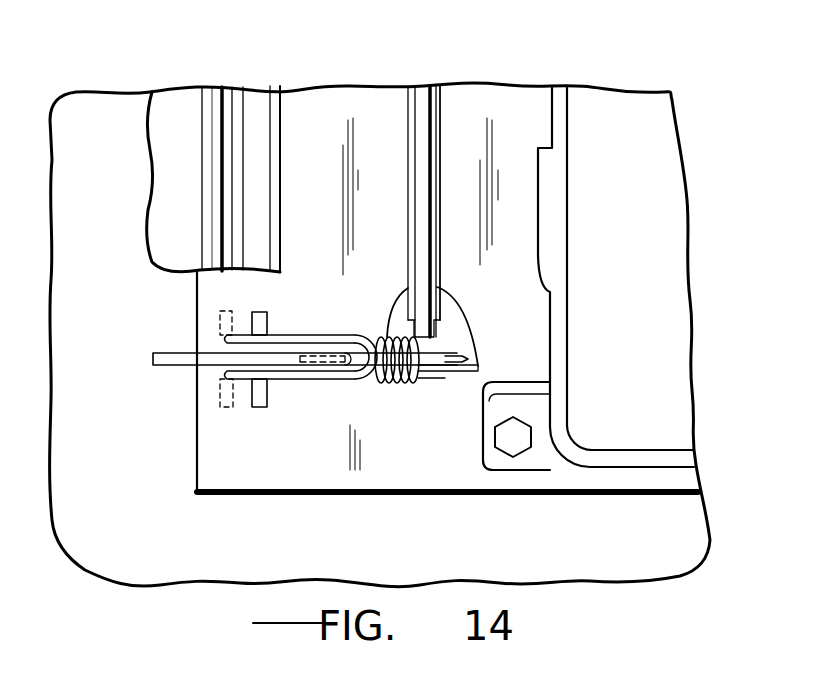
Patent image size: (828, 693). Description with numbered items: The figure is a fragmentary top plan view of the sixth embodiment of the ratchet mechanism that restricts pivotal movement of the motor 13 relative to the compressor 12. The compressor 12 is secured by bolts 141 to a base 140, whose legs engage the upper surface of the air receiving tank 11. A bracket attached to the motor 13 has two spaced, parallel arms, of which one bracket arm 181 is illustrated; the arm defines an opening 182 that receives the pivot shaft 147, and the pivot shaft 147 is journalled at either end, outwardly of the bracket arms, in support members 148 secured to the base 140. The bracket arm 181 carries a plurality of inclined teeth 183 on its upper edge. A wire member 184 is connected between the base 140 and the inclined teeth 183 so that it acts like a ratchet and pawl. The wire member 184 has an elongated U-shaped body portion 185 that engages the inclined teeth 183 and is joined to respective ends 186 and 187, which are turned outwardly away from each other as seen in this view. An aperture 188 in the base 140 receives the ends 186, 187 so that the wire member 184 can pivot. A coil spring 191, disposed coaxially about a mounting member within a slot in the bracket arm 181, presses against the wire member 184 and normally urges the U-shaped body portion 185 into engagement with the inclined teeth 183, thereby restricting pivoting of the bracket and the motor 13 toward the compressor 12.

The air receiving tank 11 is at (627, 553).
The compressor 12 is at (637, 212).
The motor 13 is at (172, 108).
The base 140 is at (432, 470).
The bolts 141 is at (515, 440).
The pivot shaft 147 is at (427, 137).
The support members 148 is at (452, 325).
The bracket arm 181 is at (170, 358).
The opening 182 is at (465, 357).
The inclined teeth 183 is at (335, 360).
The wire member 184 is at (312, 310).
The U-shaped body portion 185 is at (377, 370).
The end of wire member 186 is at (222, 395).
The end of wire member 187 is at (222, 318).
The aperture 188 is at (262, 396).
The coil spring 191 is at (385, 333).